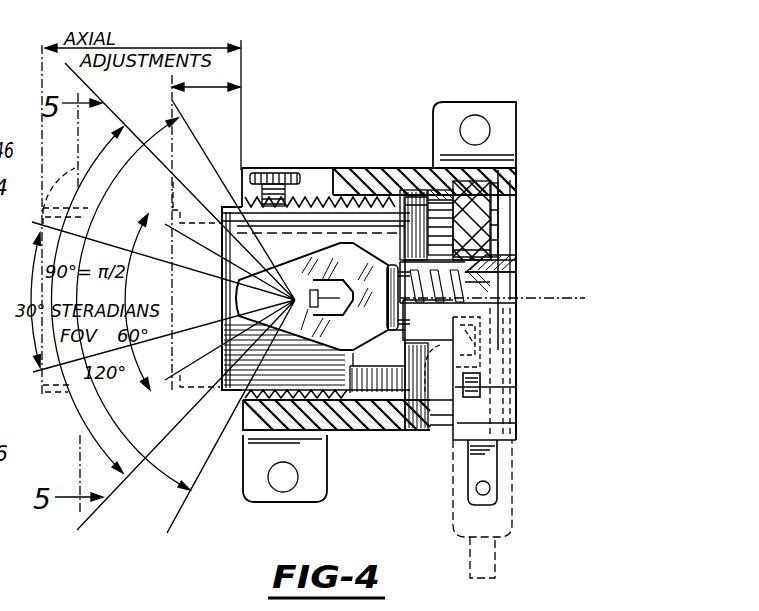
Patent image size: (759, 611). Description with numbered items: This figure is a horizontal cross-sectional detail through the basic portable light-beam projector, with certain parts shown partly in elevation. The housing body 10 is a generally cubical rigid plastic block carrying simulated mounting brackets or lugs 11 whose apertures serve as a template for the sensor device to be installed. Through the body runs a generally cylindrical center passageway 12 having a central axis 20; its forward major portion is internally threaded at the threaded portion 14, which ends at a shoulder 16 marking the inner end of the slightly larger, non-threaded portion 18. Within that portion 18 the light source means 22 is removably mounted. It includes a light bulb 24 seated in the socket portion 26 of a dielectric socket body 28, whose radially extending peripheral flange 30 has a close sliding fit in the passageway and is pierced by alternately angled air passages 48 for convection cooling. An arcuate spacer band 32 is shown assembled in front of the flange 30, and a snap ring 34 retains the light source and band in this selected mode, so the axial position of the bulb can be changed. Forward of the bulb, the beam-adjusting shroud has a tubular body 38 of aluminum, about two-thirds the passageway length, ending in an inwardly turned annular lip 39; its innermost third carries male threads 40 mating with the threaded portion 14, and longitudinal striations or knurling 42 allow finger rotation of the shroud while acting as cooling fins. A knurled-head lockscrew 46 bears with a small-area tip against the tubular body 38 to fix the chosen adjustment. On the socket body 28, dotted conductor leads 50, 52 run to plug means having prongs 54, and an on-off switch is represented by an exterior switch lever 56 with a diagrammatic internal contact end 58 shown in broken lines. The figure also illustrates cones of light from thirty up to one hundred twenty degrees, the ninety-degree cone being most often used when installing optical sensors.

The housing body 10 is at (362, 158).
The mounting brackets or lugs 11 is at (492, 100).
The center passageway 12 is at (240, 412).
The threaded portion 14 is at (357, 205).
The shoulder 16 is at (423, 200).
The non-threaded portion 18 is at (460, 190).
The central axis 20 is at (556, 298).
The light source means 22 is at (520, 272).
The light bulb 24 is at (360, 430).
The socket portion 26 is at (388, 190).
The socket body 28 is at (475, 262).
The peripheral flange 30 is at (470, 237).
The arcuate band 32 is at (437, 172).
The snap ring 34 is at (478, 237).
The tubular body 38 is at (232, 240).
The annular lip 39 is at (222, 225).
The male threads 40 is at (387, 205).
The striations or knurling 42 is at (44, 280).
The lockscrew 46 is at (278, 172).
The air passages 48 is at (470, 258).
The conductor lead 50 is at (505, 313).
The conductor lead 52 is at (520, 388).
The prongs 54 is at (490, 472).
The switch lever 56 is at (466, 400).
The internal contact end 58 is at (440, 430).